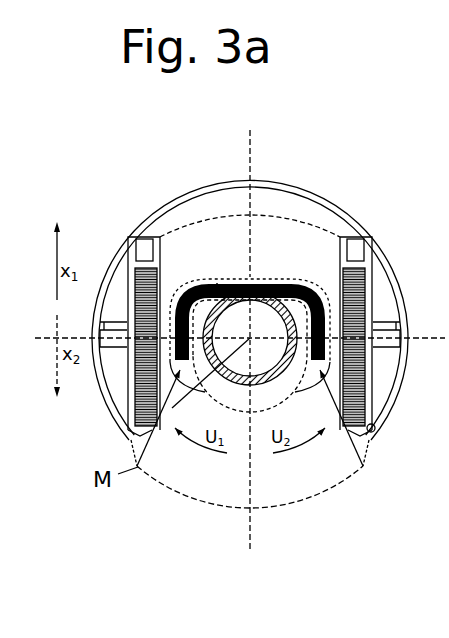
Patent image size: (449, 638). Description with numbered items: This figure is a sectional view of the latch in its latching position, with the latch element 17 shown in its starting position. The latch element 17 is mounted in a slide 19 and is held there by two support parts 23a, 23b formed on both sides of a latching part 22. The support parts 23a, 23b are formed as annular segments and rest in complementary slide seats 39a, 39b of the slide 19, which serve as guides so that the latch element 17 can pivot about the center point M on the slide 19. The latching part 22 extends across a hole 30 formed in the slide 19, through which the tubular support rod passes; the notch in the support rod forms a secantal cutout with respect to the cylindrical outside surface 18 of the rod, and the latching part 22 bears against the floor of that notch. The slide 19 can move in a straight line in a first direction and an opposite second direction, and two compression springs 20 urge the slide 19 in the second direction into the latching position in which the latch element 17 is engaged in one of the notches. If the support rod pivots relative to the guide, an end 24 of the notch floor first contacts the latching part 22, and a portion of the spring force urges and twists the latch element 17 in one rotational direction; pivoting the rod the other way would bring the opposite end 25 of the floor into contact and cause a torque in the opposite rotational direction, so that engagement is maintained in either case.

The latch element 17 is at (233, 278).
The cylindrical outside surface 18 is at (322, 375).
The slide 19 is at (295, 473).
The compression springs 20 is at (378, 300).
The latching part 22 is at (262, 276).
The support part 23a is at (160, 277).
The support part 23b is at (342, 277).
The end of the floor 24 is at (215, 278).
The end of the floor 25 is at (285, 281).
The hole 30 is at (238, 402).
The slide seat 39a is at (140, 372).
The slide seat 39b is at (368, 458).